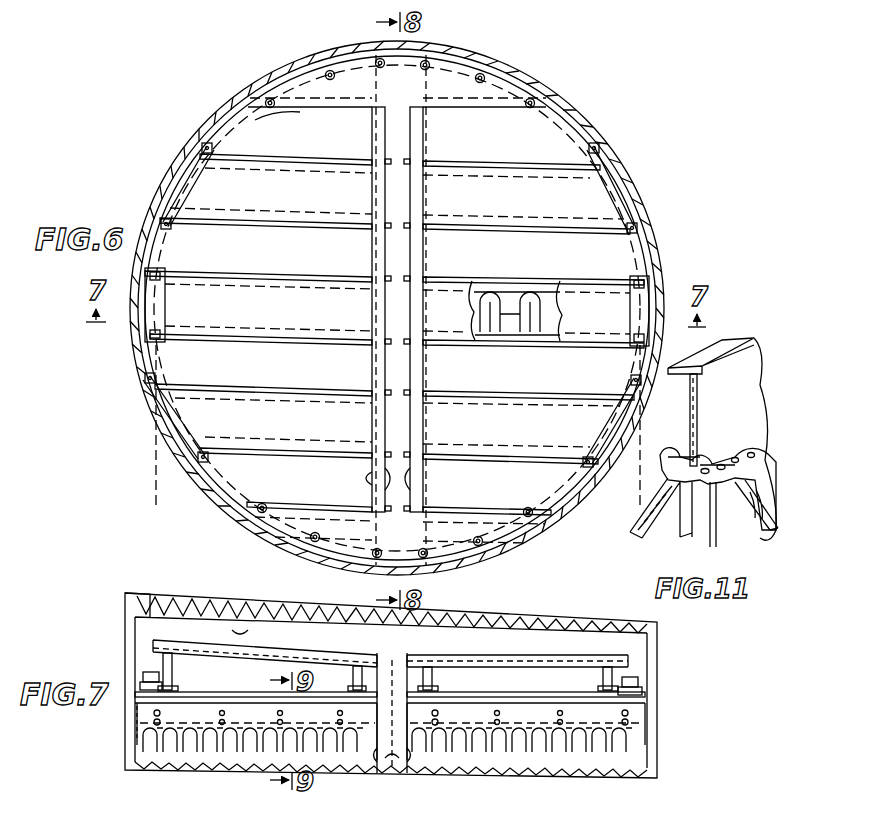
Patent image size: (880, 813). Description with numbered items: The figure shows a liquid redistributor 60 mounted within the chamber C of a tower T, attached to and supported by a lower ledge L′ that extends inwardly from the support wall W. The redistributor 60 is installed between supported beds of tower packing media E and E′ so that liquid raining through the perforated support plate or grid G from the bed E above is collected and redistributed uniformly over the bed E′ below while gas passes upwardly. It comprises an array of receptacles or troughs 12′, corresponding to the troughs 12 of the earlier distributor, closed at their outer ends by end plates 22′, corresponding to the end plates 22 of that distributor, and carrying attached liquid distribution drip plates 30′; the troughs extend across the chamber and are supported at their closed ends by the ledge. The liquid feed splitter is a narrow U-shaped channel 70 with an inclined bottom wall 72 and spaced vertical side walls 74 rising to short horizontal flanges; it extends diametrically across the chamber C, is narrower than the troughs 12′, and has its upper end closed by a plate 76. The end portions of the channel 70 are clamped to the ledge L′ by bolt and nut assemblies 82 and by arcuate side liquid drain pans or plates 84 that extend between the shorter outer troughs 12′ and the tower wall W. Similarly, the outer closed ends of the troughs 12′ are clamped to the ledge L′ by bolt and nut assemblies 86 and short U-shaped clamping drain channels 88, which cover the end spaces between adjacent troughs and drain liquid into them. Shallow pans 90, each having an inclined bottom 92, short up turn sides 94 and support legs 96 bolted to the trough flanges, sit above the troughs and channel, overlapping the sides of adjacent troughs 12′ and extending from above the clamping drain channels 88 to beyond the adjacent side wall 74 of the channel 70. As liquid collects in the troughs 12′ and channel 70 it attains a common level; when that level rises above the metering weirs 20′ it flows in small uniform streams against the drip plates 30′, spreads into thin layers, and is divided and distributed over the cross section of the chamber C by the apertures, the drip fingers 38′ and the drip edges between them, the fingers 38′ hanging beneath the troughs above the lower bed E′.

In FIG. 6, the floor panel 12 is at (286, 369).
In FIG. 6, the troughs 12′ is at (552, 143).
In FIG. 7, the troughs 12′ is at (259, 690).
In FIG. 7, the metering weirs 20′ is at (300, 714).
In FIG. 7, the side member 22 is at (140, 724).
In FIG. 6, the end plates 22′ is at (224, 120).
In FIG. 7, the end plates 22′ is at (650, 716).
In FIG. 6, the liquid distribution drip plates 30′ is at (526, 294).
In FIG. 7, the liquid distribution drip plates 30′ is at (310, 746).
In FIG. 6, the drip fingers 38′ is at (507, 332).
In FIG. 7, the drip fingers 38′ is at (200, 745).
In FIG. 6, the liquid redistributor 60 is at (558, 92).
In FIG. 7, the liquid redistributor 60 is at (533, 647).
In FIG. 6, the channel 70 is at (397, 303).
In FIG. 7, the channel 70 is at (409, 746).
In FIG. 6, the inclined bottom wall 72 is at (402, 193).
In FIG. 7, the inclined bottom wall 72 is at (376, 756).
In FIG. 6, the side walls 74 is at (413, 474).
In FIG. 7, the side walls 74 is at (393, 762).
In FIG. 6, the plate 76 is at (372, 100).
In FIG. 7, the plate 76 is at (380, 704).
In FIG. 6, the bolt and nut assemblies 82 is at (526, 99).
In FIG. 6, the side liquid drain pans 84 is at (348, 72).
In FIG. 6, the bolt and nut assemblies 86 is at (617, 172).
In FIG. 7, the bolt and nut assemblies 86 is at (150, 676).
In FIG. 6, the clamping drain channels 88 is at (646, 284).
In FIG. 7, the clamping drain channels 88 is at (145, 686).
In FIG. 6, the shallow pans 90 is at (298, 232).
In FIG. 7, the shallow pans 90 is at (372, 662).
In FIG. 6, the inclined bottom 92 is at (313, 209).
In FIG. 7, the inclined bottom 92 is at (313, 662).
In FIG. 6, the up turn sides 94 is at (543, 170).
In FIG. 7, the up turn sides 94 is at (283, 657).
In FIG. 7, the support legs 96 is at (174, 670).
In FIG. 6, the tower T is at (257, 79).
In FIG. 7, the tower T is at (661, 632).
In FIG. 6, the support wall W is at (177, 172).
In FIG. 7, the support wall W is at (660, 758).
In FIG. 6, the ledge L′ is at (206, 131).
In FIG. 7, the ledge L′ is at (140, 716).
In FIG. 7, the bed of tower packing media E is at (152, 604).
In FIG. 7, the bed of tower packing media E′ is at (155, 768).
In FIG. 7, the perforated support plate or grid G is at (240, 628).
In FIG. 7, the chamber C is at (497, 640).